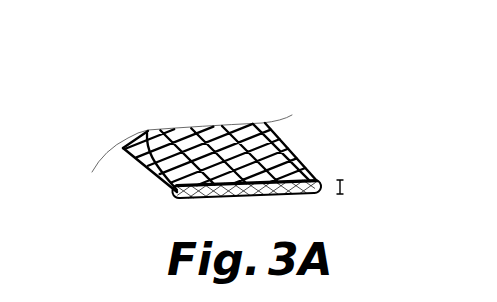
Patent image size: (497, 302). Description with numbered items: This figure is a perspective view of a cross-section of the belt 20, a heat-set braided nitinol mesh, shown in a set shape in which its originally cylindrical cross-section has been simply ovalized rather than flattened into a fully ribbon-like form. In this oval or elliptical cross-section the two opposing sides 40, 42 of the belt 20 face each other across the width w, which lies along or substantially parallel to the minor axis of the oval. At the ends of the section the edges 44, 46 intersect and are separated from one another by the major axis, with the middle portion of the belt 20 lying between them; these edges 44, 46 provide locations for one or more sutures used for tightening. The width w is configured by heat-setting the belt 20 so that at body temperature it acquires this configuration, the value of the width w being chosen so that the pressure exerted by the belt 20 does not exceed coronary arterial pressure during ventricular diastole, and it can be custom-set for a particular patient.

The belt 20 is at (118, 96).
The side 40 is at (241, 141).
The side 42 is at (220, 198).
The edge 44 is at (172, 191).
The edge 46 is at (318, 180).
The width W is at (343, 187).